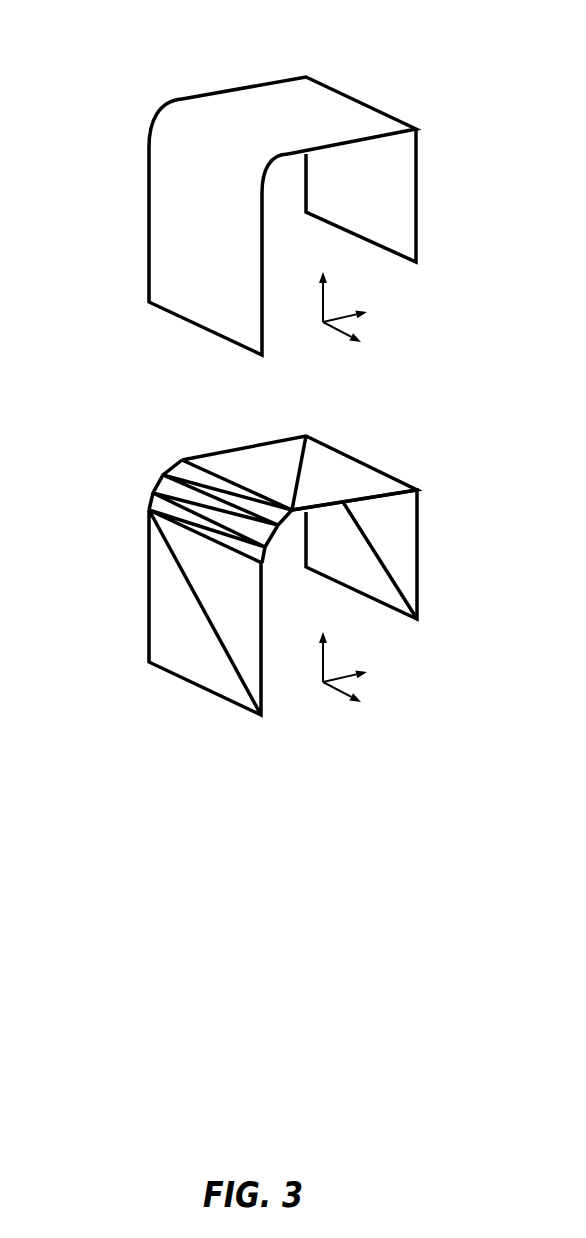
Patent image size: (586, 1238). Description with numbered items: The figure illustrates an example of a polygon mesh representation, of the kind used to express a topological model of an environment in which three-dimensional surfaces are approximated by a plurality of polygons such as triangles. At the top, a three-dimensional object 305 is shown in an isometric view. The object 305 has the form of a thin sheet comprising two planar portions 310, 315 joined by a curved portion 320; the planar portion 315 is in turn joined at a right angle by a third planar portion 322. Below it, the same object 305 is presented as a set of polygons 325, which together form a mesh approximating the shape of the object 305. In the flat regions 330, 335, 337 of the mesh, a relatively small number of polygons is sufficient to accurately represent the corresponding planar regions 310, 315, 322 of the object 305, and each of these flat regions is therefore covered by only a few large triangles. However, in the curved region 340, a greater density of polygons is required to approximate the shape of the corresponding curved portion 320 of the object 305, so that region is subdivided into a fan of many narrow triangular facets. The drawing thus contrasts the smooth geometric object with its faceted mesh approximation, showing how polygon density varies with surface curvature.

The three-dimensional object 305 is at (173, 58).
The planar portion 310 is at (157, 230).
The planar portion 315 is at (350, 110).
The curved portion 320 is at (260, 158).
The third planar portion 322 is at (418, 241).
The set of polygons 325 is at (142, 443).
The flat region 330 is at (157, 620).
The flat region 335 is at (350, 470).
The flat region 337 is at (420, 597).
The curved region 340 is at (268, 518).